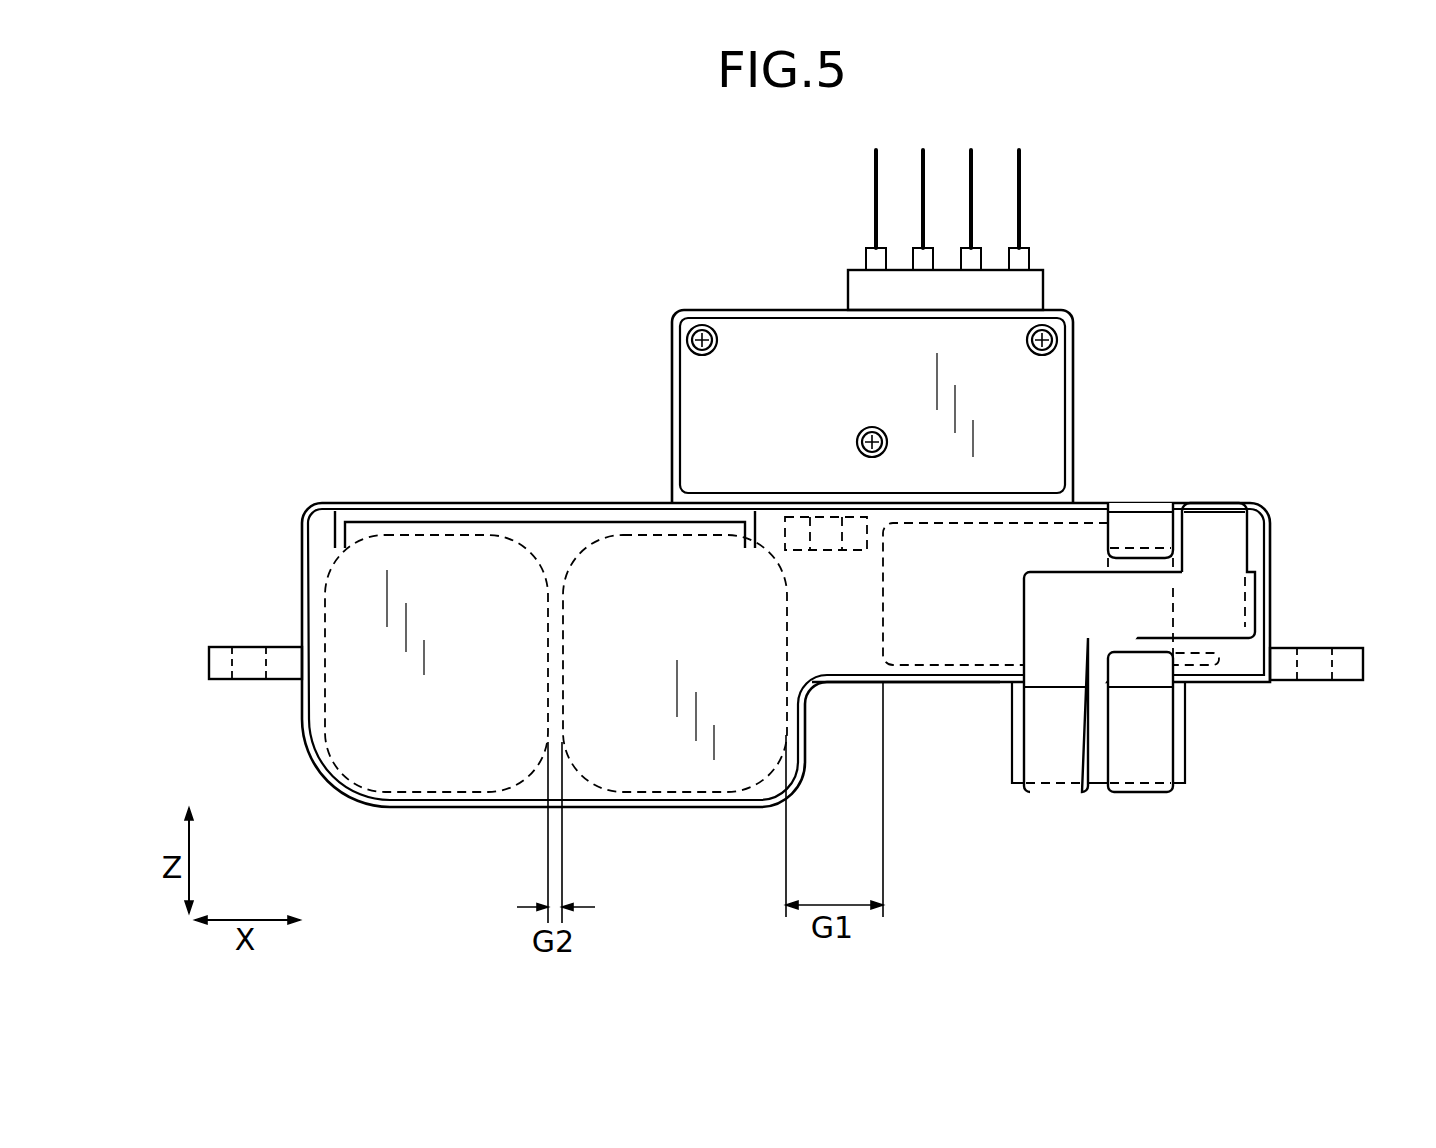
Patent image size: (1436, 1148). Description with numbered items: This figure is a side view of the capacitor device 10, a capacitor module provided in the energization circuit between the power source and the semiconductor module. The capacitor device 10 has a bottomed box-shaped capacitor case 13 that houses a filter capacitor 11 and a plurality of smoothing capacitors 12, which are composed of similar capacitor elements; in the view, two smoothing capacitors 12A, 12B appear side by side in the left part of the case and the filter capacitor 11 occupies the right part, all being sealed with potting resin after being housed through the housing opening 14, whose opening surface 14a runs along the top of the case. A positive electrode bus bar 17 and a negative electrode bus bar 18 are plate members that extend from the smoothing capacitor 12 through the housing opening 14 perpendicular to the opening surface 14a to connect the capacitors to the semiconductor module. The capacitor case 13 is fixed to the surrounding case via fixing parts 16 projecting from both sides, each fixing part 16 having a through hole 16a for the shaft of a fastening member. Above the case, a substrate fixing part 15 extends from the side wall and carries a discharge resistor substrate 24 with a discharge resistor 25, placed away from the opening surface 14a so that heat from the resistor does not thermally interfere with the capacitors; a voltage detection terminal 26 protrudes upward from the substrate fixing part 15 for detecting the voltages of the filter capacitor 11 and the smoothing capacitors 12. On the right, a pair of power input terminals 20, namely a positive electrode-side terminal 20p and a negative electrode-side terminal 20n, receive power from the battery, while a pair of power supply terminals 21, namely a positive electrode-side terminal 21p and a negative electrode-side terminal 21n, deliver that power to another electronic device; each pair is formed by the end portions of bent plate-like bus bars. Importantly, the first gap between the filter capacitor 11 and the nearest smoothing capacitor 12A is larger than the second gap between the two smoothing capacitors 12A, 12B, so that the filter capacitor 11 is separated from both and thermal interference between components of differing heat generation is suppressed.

The capacitor device 10 is at (1156, 352).
The filter capacitor 11 is at (926, 672).
The smoothing capacitors 12 is at (556, 721).
The smoothing capacitor 12A is at (658, 797).
The smoothing capacitor 12B is at (443, 797).
The capacitor case 13 is at (903, 686).
The housing opening 14 is at (320, 531).
The opening surface 14a is at (786, 655).
The substrate fixing part 15 is at (831, 372).
The fixing part 16 is at (280, 643).
The through hole 16a is at (247, 660).
The positive electrode bus bar 17 is at (422, 503).
The negative electrode bus bar 18 is at (545, 535).
The power input terminals 20 is at (1183, 503).
The negative electrode-side terminal 20n is at (1138, 505).
The positive electrode-side terminal 20p is at (1130, 437).
The power supply terminals 21 is at (1109, 746).
The positive electrode-side terminal 21p is at (1053, 797).
The negative electrode-side terminal 21n is at (1150, 761).
The discharge resistor substrate 24 is at (872, 367).
The discharge resistor 25 is at (772, 357).
The voltage detection terminal 26 is at (858, 142).